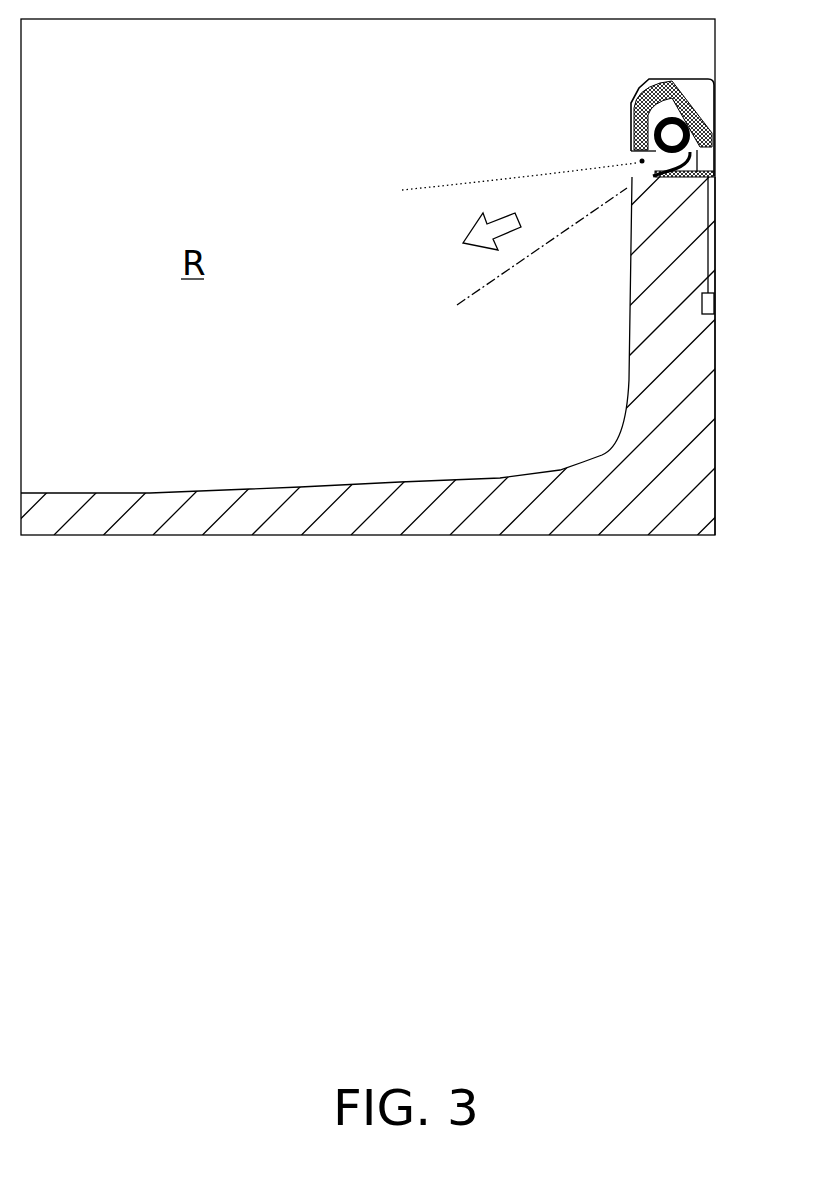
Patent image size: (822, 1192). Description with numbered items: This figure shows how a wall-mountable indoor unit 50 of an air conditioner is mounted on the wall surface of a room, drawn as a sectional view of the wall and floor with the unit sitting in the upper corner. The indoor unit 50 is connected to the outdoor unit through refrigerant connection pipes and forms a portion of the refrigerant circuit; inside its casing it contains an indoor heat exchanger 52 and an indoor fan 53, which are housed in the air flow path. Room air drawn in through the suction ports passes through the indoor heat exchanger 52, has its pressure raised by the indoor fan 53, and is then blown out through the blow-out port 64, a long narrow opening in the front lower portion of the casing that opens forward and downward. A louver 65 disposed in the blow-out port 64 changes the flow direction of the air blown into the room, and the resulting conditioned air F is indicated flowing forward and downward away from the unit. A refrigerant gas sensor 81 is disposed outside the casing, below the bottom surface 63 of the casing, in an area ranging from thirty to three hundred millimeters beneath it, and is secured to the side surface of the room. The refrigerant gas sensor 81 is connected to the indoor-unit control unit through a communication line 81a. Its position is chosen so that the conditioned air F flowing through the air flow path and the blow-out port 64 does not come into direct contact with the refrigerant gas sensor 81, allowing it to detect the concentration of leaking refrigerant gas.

The indoor unit 50 is at (675, 117).
The indoor heat exchanger 52 is at (684, 88).
The indoor fan 53 is at (712, 132).
The bottom surface 63 is at (715, 176).
The blow-out port 64 is at (636, 170).
The louver 65 is at (637, 160).
The refrigerant gas sensor 81 is at (715, 304).
The communication line 81a is at (709, 243).
The conditioned air F is at (479, 240).